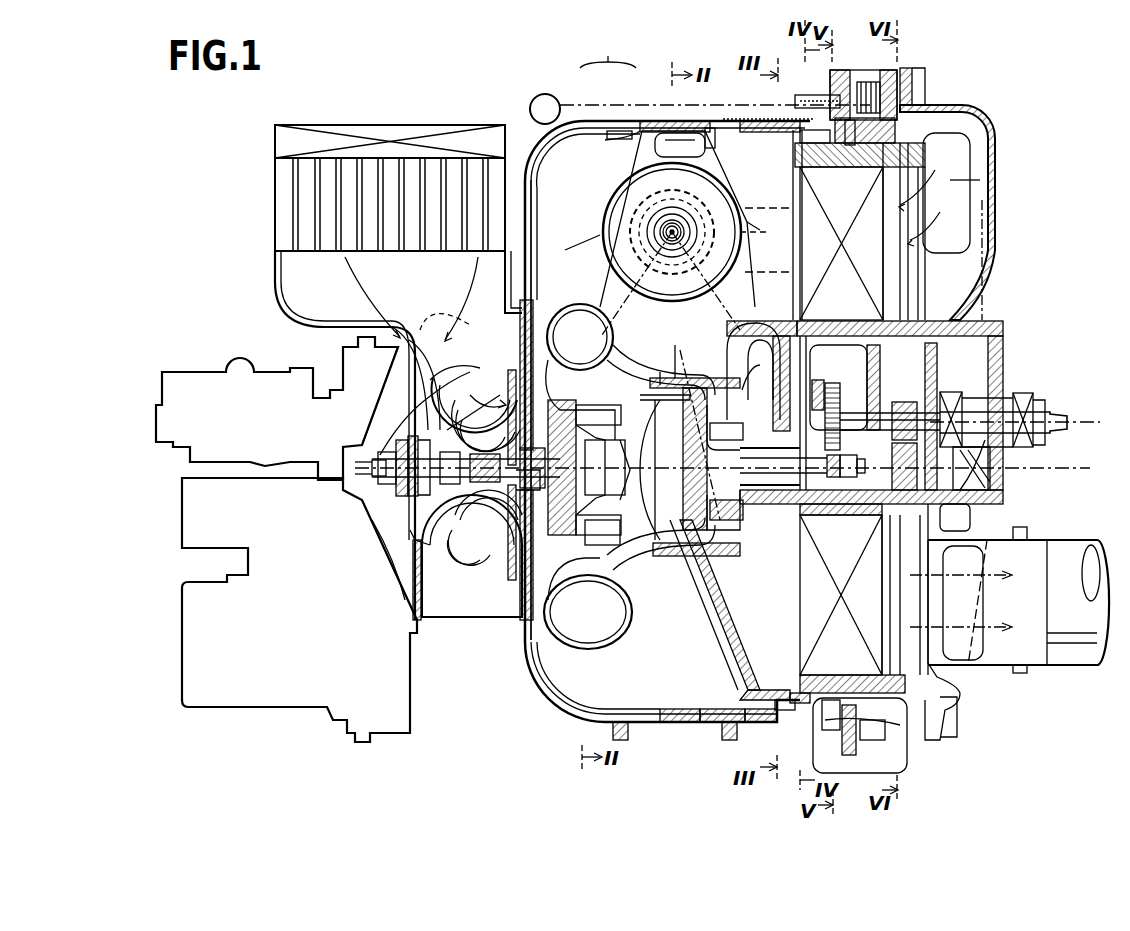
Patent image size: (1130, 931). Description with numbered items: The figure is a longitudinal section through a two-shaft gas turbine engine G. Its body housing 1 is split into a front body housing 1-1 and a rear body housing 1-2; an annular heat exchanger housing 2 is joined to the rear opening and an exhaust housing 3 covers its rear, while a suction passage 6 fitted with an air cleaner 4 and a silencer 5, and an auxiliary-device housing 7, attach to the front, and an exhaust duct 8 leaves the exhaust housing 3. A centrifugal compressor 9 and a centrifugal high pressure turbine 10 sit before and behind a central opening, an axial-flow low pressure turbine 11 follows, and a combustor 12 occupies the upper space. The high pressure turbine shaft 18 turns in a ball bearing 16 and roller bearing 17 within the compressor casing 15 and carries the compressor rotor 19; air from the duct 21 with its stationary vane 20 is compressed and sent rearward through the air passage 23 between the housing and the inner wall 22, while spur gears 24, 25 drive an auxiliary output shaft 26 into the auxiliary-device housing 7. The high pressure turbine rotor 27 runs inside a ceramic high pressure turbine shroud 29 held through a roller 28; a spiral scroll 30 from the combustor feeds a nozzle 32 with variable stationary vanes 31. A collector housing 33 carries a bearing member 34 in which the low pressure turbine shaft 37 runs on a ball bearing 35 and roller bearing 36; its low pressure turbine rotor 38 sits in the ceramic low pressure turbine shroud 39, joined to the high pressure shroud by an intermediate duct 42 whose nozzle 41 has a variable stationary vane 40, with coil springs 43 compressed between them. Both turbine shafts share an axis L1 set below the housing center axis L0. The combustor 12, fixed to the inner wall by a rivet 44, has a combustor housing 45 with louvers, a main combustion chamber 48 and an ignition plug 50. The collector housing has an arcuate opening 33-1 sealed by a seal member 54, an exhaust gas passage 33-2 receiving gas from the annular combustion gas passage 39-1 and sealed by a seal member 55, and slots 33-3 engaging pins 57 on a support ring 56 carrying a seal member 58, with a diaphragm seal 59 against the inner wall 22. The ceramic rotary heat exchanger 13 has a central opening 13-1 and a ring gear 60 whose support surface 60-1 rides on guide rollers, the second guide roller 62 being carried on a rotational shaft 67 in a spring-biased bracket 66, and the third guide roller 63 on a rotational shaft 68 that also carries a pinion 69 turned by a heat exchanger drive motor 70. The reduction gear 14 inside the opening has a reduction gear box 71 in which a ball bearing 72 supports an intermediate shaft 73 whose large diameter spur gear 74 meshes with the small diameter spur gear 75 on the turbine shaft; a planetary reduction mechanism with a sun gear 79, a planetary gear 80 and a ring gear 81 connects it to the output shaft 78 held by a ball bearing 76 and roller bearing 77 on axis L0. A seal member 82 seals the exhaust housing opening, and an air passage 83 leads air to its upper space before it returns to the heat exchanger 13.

The body housing 1 is at (608, 51).
The front body housing 1-1 is at (592, 125).
The rear body housing 1-2 is at (638, 125).
The heat exchanger housing 2 is at (755, 120).
The exhaust housing 3 is at (957, 103).
The air cleaner 4 is at (275, 150).
The silencer 5 is at (275, 202).
The suction passage 6 is at (278, 305).
The auxiliary-device housing 7 is at (300, 609).
The exhaust duct 8 is at (1060, 540).
The centrifugal compressor 9 is at (500, 380).
The high pressure turbine 10 is at (625, 375).
The low pressure turbine 11 is at (703, 352).
The combustor 12 is at (598, 238).
The heat exchanger 13 is at (895, 160).
The circular opening 13-1 is at (838, 320).
The reduction gear 14 is at (985, 350).
The compressor casing 15 is at (470, 385).
The ball bearing 16 is at (380, 480).
The roller bearing 17 is at (482, 520).
The high pressure turbine shaft 18 is at (423, 452).
The compressor rotor 19 is at (495, 410).
The stationary vane 20 is at (430, 395).
The duct 21 is at (465, 545).
The inner wall 22 is at (625, 142).
The air passage 23 is at (535, 222).
The spur gear 24 is at (385, 455).
The spur gear 25 is at (410, 560).
The auxiliary output shaft 26 is at (408, 530).
The high pressure turbine rotor 27 is at (622, 480).
The roller 28 is at (565, 580).
The high pressure turbine shroud 29 is at (620, 540).
The scroll 30 is at (632, 630).
The variable stationary vane 31 is at (925, 672).
The nozzle 32 is at (960, 128).
The collector housing 33 is at (955, 183).
The arcuate opening 33-1 is at (790, 170).
The exhaust gas passage 33-2 is at (730, 610).
The slot 33-3 is at (739, 734).
The bearing member 34 is at (753, 371).
The ball bearing 35 is at (724, 510).
The roller bearing 36 is at (864, 598).
The low pressure turbine shaft 37 is at (812, 515).
The low pressure turbine rotor 38 is at (675, 557).
The low pressure turbine shroud 39 is at (723, 427).
The combustion gas passage 39-1 is at (700, 560).
The variable stationary vane 40 is at (678, 378).
The nozzle 41 is at (665, 345).
The intermediate duct 42 is at (655, 467).
The coil spring 43 is at (679, 389).
The rivet 44 is at (700, 145).
The combustor housing 45 is at (742, 232).
The main combustion chamber 48 is at (672, 242).
The ignition plug 50 is at (660, 270).
The seal member 54 is at (798, 310).
The seal member 55 is at (805, 712).
The support ring 56 is at (800, 125).
The pin 57 is at (795, 692).
The seal member 58 is at (825, 167).
The diaphragm seal 59 is at (716, 140).
The ring gear 60 is at (868, 731).
The support surface 60-1 is at (850, 145).
The second guide roller 62 is at (856, 793).
The third guide roller 63 is at (848, 80).
The bracket 66 is at (826, 700).
The rotational shaft 67 is at (890, 762).
The rotational shaft 68 is at (805, 95).
The pinion 69 is at (868, 82).
The heat exchanger drive motor 70 is at (530, 106).
The reduction gear box 71 is at (855, 300).
The ball bearing 72 is at (818, 400).
The intermediate shaft 73 is at (850, 413).
The large diameter spur gear 74 is at (834, 383).
The small diameter spur gear 75 is at (848, 465).
The ball bearing 76 is at (1005, 402).
The roller bearing 77 is at (950, 392).
The output shaft 78 is at (971, 468).
The gear 79 is at (905, 402).
The planetary gear 80 is at (915, 515).
The ring gear 81 is at (958, 516).
The seal member 82 is at (850, 515).
The air passage 83 is at (945, 740).
The gas turbine engine G is at (1015, 118).
The center axis L0 is at (1088, 422).
The axis L1 is at (1052, 468).